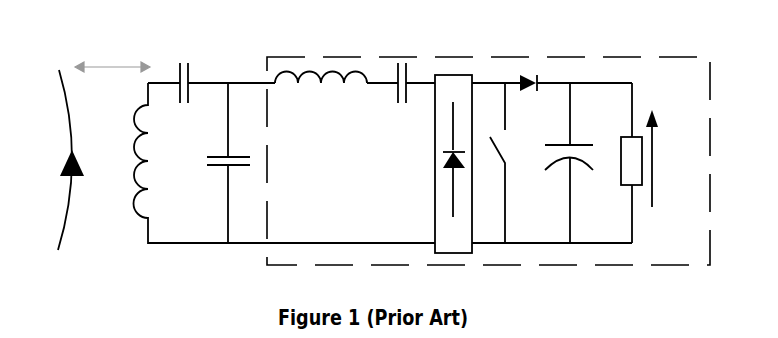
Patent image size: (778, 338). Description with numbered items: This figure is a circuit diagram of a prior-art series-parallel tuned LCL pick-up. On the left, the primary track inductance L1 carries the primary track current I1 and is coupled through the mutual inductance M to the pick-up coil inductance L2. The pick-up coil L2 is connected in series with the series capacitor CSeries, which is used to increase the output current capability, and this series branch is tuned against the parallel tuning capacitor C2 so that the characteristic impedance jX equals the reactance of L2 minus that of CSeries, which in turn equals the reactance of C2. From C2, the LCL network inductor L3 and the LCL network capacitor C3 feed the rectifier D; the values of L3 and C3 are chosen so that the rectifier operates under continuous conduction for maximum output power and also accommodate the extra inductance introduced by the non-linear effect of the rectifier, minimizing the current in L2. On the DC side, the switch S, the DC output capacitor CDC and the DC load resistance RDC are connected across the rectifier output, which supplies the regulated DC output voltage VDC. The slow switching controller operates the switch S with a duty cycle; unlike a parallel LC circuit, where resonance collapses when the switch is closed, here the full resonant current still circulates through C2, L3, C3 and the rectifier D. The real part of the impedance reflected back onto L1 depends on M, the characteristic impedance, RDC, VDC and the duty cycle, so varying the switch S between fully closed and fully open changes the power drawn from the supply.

The mutual inductance M is at (112, 53).
The primary track inductance L1 is at (80, 160).
The primary track current I1 is at (60, 160).
The pick-up coil inductance L2 is at (181, 163).
The series capacitor CSeries is at (188, 99).
The parallel tuning capacitor C2 is at (234, 163).
The characteristic impedance jX is at (336, 34).
The LCL network inductor L3 is at (321, 100).
The LCL network capacitor C3 is at (399, 101).
The rectifier D is at (465, 164).
The switch S is at (511, 163).
The DC output capacitor CDC is at (556, 163).
The DC load resistance RDC is at (609, 163).
The regulated DC output voltage VDC is at (670, 158).